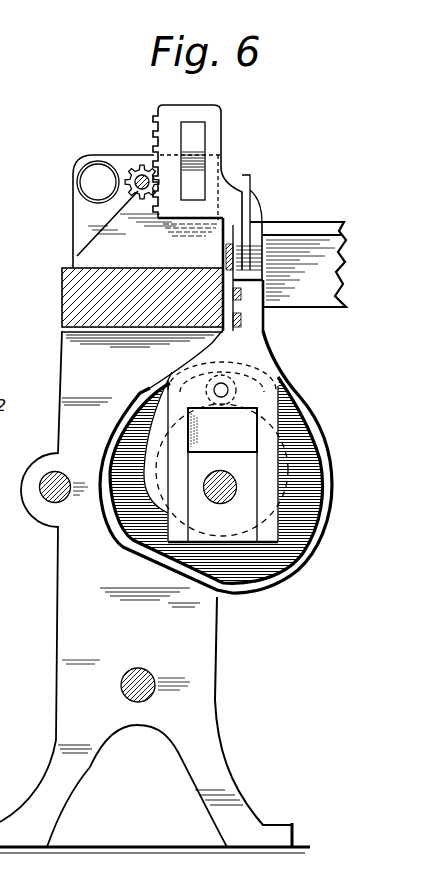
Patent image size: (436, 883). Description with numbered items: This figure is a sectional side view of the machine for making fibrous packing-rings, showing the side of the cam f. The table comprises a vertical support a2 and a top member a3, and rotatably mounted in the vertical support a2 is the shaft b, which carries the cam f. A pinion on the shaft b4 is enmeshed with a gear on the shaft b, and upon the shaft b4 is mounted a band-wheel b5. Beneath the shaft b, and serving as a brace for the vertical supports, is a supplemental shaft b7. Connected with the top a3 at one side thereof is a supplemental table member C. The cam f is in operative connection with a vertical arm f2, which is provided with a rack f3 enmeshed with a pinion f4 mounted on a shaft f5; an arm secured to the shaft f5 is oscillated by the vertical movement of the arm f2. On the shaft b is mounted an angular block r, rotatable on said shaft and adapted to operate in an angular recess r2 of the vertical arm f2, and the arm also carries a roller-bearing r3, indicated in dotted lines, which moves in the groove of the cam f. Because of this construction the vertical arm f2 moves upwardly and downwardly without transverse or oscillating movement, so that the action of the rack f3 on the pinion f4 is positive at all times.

The vertical support a2 is at (155, 504).
The top member a3 is at (62, 295).
The shaft b is at (213, 477).
The shaft b4 is at (54, 480).
The band-wheel b5 is at (106, 158).
The supplemental shaft b7 is at (121, 692).
The supplemental table member C is at (298, 264).
The cam f is at (313, 452).
The vertical arm f2 is at (268, 341).
The rack f3 is at (158, 130).
The pinion f4 is at (143, 198).
The shaft f5 is at (124, 227).
The angular block r is at (253, 506).
The angular recess r2 is at (257, 430).
The roller-bearing r3 is at (238, 389).